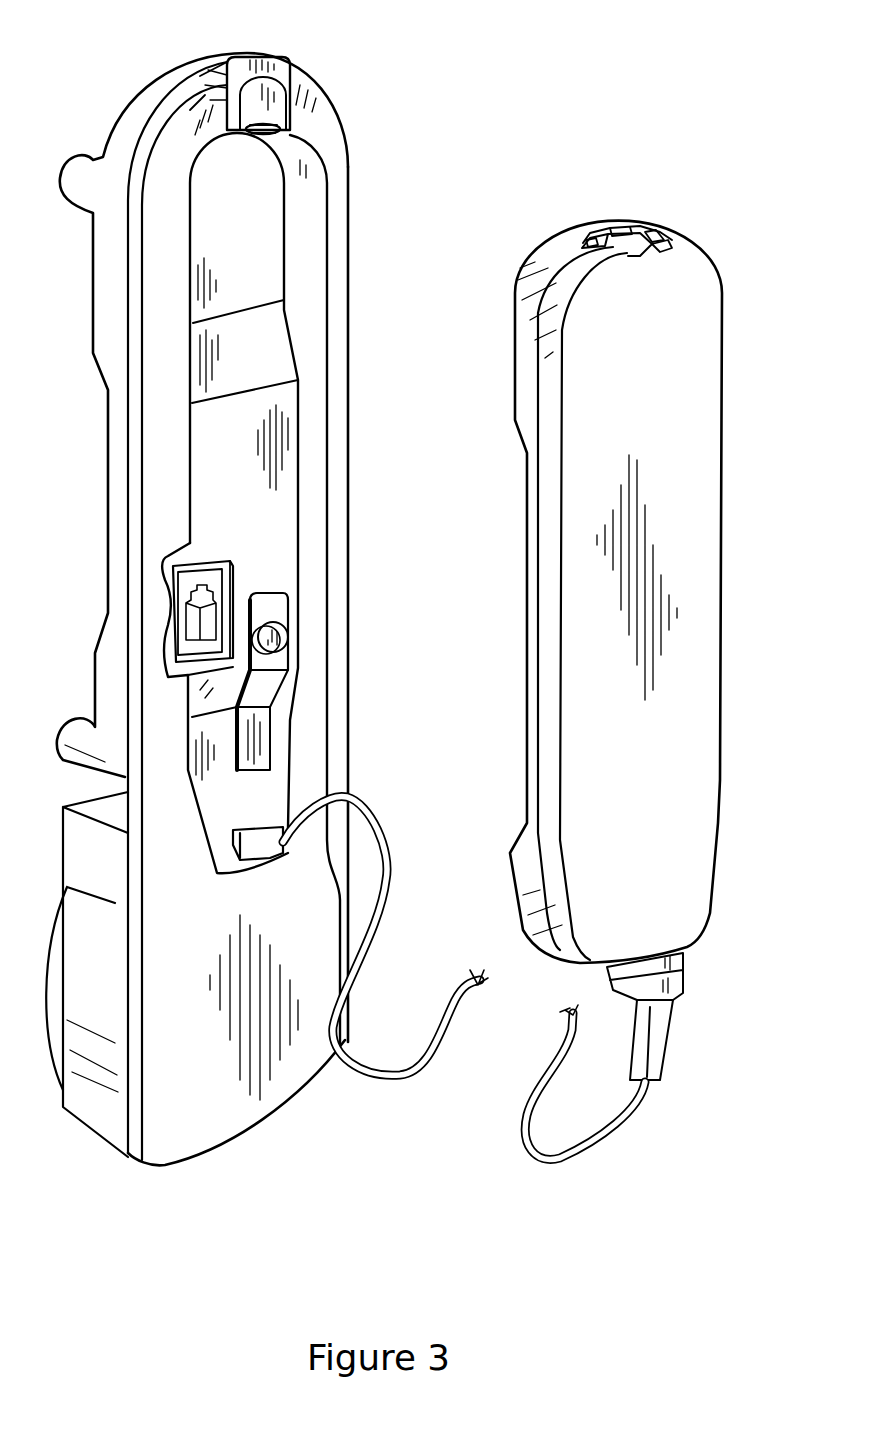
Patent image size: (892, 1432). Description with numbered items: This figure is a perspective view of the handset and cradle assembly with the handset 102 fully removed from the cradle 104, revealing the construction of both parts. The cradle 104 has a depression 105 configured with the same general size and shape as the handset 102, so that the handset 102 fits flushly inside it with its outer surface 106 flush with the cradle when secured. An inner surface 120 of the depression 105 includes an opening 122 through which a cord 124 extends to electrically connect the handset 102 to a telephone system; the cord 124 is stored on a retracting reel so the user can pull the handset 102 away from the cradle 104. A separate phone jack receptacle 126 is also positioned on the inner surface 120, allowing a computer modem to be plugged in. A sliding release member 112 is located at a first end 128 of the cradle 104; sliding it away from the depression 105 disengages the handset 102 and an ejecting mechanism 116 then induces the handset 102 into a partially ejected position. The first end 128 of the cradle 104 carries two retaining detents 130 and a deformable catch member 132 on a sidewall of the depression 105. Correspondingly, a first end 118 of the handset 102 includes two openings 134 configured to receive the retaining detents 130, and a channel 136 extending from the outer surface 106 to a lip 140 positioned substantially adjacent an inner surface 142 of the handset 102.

The handset 102 is at (723, 380).
The cradle 104 is at (349, 173).
The depression 105 is at (262, 270).
The outer surface 106 is at (660, 421).
The sliding release member 112 is at (286, 57).
The ejecting mechanism 116 is at (275, 590).
The first end 118 is at (600, 220).
The inner surface 120 is at (239, 465).
The opening 122 is at (258, 830).
The cord 124 is at (382, 824).
The phone jack receptacle 126 is at (213, 572).
The first end 128 is at (300, 153).
The retaining detents 130 is at (250, 129).
The deformable catch member 132 is at (267, 140).
The openings 134 is at (655, 230).
The channel 136 is at (672, 236).
The lip 140 is at (610, 222).
The inner surface 142 is at (514, 308).